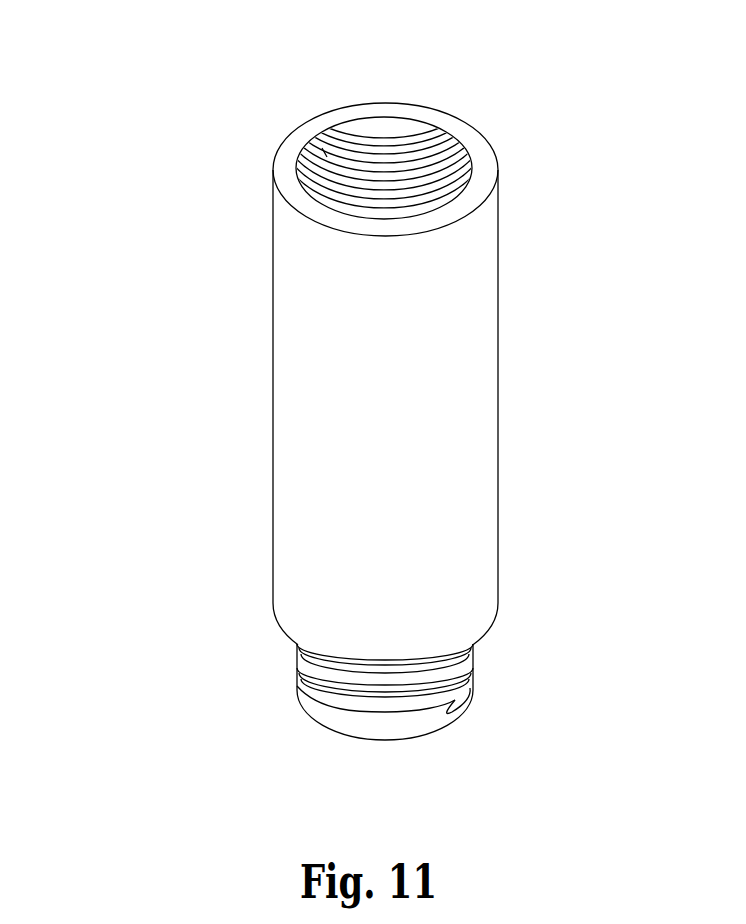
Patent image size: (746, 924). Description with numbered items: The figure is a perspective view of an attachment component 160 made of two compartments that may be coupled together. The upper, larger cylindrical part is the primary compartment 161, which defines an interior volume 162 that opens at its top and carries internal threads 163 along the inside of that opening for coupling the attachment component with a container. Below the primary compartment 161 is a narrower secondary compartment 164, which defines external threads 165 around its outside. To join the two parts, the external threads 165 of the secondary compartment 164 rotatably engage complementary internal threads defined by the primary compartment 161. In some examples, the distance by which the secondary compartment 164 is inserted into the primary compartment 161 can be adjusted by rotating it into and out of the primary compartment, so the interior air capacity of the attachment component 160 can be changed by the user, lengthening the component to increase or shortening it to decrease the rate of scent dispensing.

The attachment component 160 is at (140, 132).
The primary compartment 161 is at (408, 446).
The interior volume 162 is at (383, 190).
The internal threads 163 is at (458, 170).
The secondary compartment 164 is at (512, 664).
The external threads 165 is at (425, 685).